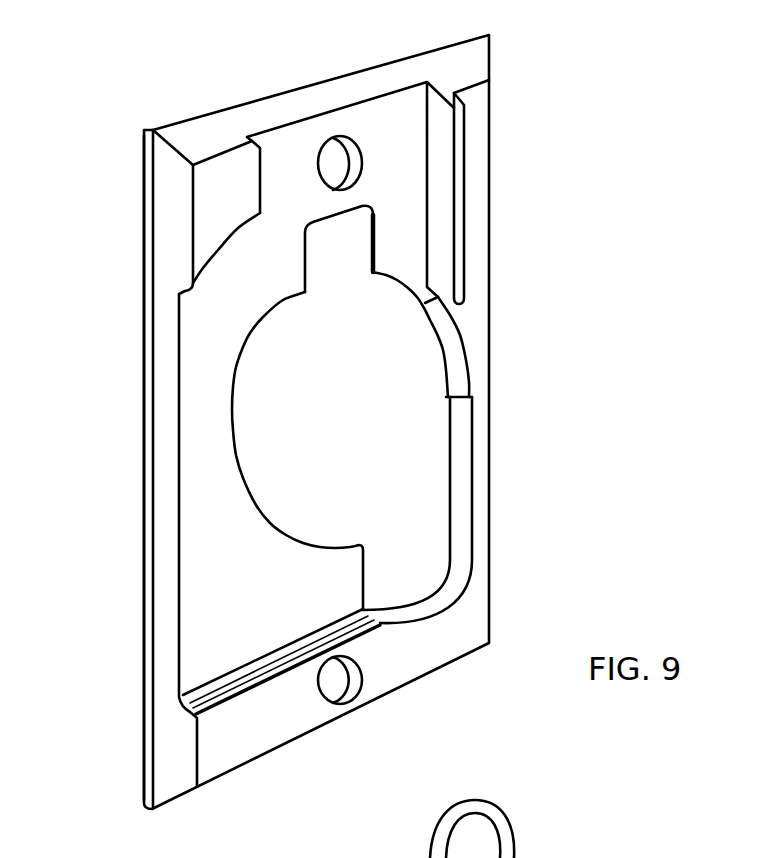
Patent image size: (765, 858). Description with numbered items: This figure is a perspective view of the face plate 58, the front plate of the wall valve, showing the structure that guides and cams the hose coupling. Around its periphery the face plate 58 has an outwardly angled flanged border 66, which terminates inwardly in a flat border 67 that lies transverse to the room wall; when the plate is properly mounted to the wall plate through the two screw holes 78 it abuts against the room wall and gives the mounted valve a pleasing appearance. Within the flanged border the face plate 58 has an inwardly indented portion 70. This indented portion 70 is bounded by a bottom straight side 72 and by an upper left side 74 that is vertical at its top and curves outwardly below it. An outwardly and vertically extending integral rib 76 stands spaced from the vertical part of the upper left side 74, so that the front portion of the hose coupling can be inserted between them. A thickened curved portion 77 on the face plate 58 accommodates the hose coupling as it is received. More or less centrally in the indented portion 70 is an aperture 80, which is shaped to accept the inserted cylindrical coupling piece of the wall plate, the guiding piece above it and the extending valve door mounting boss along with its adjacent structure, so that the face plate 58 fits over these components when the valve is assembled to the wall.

The face plate 58 is at (538, 481).
The outwardly angled flanged border 66 is at (165, 745).
The flat border 67 is at (147, 707).
The inwardly indented portion 70 is at (244, 601).
The bottom straight side 72 is at (268, 660).
The upper left side 74 is at (256, 190).
The integral rib 76 is at (455, 204).
The thickened curved portion 77 is at (457, 363).
The screw holes 78 is at (332, 152).
The aperture 80 is at (365, 411).